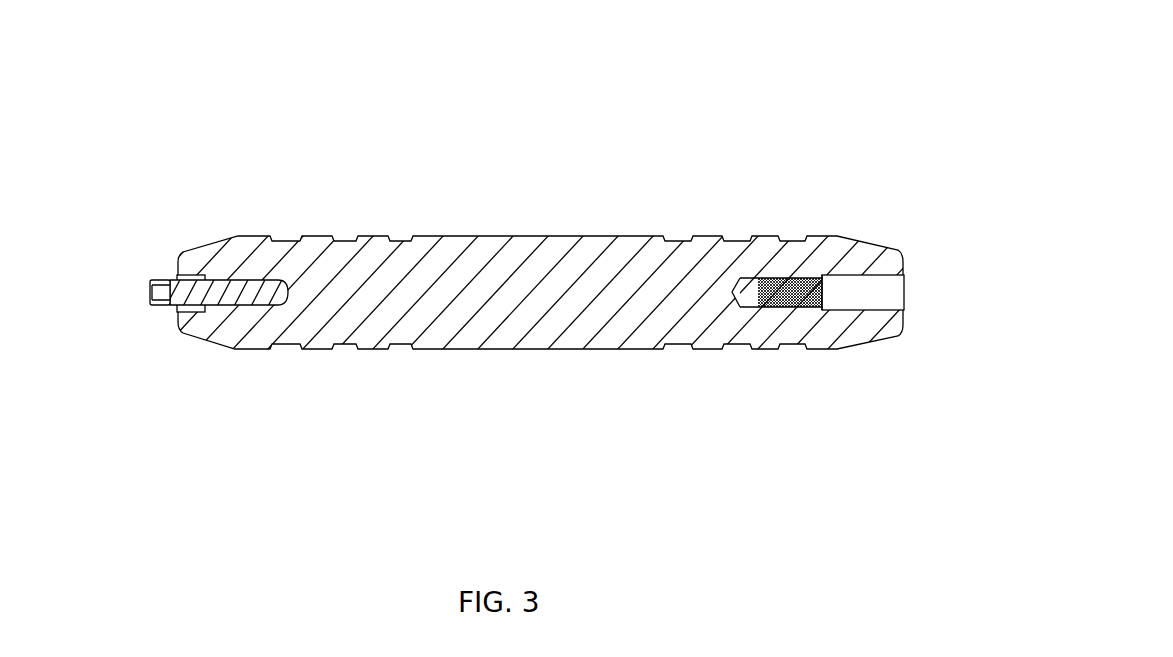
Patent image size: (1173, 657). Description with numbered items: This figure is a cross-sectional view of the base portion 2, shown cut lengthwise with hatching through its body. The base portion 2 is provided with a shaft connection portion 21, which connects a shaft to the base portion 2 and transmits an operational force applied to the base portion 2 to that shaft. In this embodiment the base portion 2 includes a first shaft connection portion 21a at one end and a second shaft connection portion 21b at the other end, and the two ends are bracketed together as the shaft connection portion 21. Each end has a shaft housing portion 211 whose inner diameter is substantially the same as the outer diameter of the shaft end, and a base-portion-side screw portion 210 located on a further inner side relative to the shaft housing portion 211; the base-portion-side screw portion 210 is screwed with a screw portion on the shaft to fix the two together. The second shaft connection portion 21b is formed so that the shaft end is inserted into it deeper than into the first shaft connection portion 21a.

The base portion 2 is at (548, 270).
The shaft connection portion 21 is at (548, 363).
The first shaft connection portion 21a is at (204, 362).
The second shaft connection portion 21b is at (877, 364).
The base-portion-side screw portion 210 is at (178, 282).
The shaft housing portion 211 is at (868, 292).